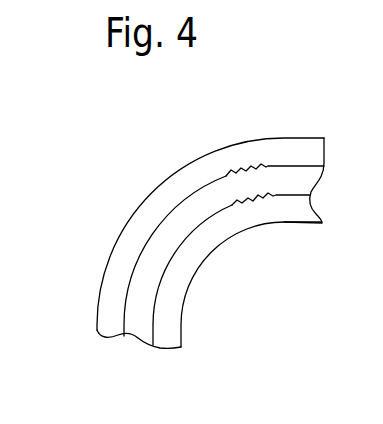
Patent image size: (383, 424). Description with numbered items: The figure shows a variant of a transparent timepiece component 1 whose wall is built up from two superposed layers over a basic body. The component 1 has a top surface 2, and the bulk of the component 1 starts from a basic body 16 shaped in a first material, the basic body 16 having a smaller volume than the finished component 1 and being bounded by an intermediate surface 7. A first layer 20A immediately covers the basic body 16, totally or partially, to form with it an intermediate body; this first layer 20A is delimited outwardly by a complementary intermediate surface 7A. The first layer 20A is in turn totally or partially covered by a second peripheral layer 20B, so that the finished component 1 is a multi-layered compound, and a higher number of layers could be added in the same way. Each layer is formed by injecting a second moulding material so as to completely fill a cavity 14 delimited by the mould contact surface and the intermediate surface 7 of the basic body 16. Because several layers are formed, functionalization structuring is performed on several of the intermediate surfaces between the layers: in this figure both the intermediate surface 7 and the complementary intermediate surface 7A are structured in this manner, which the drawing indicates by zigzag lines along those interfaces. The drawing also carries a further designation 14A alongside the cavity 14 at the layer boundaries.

The transparent timepiece component 1 is at (78, 294).
The top surface 2 is at (181, 158).
The intermediate surface 7 is at (267, 186).
The complementary intermediate surface 7A is at (236, 162).
The cavity 14 is at (144, 298).
The outer layer 14A is at (113, 298).
The basic body 16 is at (203, 240).
The first layer 20A is at (167, 237).
The second peripheral layer 20B is at (162, 203).